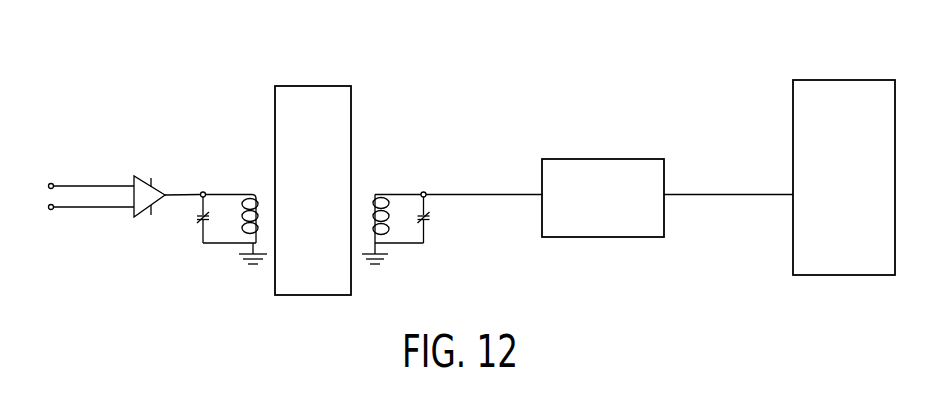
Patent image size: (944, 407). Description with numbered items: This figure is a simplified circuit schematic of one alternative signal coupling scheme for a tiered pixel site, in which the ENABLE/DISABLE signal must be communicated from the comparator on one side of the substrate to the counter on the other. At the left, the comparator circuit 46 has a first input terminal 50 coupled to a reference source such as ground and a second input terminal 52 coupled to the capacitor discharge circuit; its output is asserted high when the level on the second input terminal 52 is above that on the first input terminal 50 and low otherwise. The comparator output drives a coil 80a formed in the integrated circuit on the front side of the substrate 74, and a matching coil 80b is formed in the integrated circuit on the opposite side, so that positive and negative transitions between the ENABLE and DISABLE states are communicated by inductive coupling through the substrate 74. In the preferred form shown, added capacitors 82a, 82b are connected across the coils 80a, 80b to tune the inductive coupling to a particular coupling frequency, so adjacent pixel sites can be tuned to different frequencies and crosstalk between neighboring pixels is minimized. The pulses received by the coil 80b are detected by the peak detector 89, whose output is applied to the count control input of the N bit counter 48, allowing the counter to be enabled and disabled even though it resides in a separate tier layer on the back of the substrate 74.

The first input terminal 50 is at (51, 183).
The second input terminal 52 is at (51, 210).
The comparator circuit 46 is at (161, 190).
The substrate 74 is at (313, 85).
The coil 80a is at (253, 193).
The coil 80b is at (375, 193).
The added capacitor 82a is at (198, 222).
The added capacitor 82b is at (427, 220).
The peak detector 89 is at (600, 159).
The N bit counter 48 is at (852, 80).